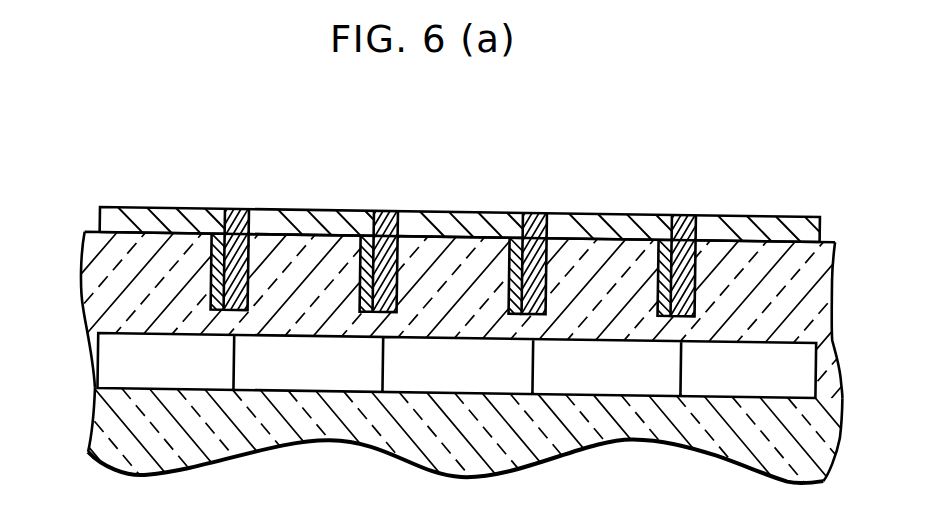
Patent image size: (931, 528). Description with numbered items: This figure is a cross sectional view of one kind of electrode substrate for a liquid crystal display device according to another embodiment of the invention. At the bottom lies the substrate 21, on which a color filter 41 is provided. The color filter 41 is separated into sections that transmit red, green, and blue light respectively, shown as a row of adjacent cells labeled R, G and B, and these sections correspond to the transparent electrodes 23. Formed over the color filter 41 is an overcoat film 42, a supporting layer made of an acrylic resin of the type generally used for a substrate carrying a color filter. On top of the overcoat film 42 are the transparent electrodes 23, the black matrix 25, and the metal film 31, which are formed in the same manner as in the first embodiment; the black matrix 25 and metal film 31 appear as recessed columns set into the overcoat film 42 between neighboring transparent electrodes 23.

The substrate 21 is at (122, 443).
The transparent electrodes 23 is at (160, 213).
The black matrix 25 is at (242, 218).
The metal film 31 is at (211, 242).
The color filter 41 is at (192, 377).
The overcoat film 42 is at (123, 243).